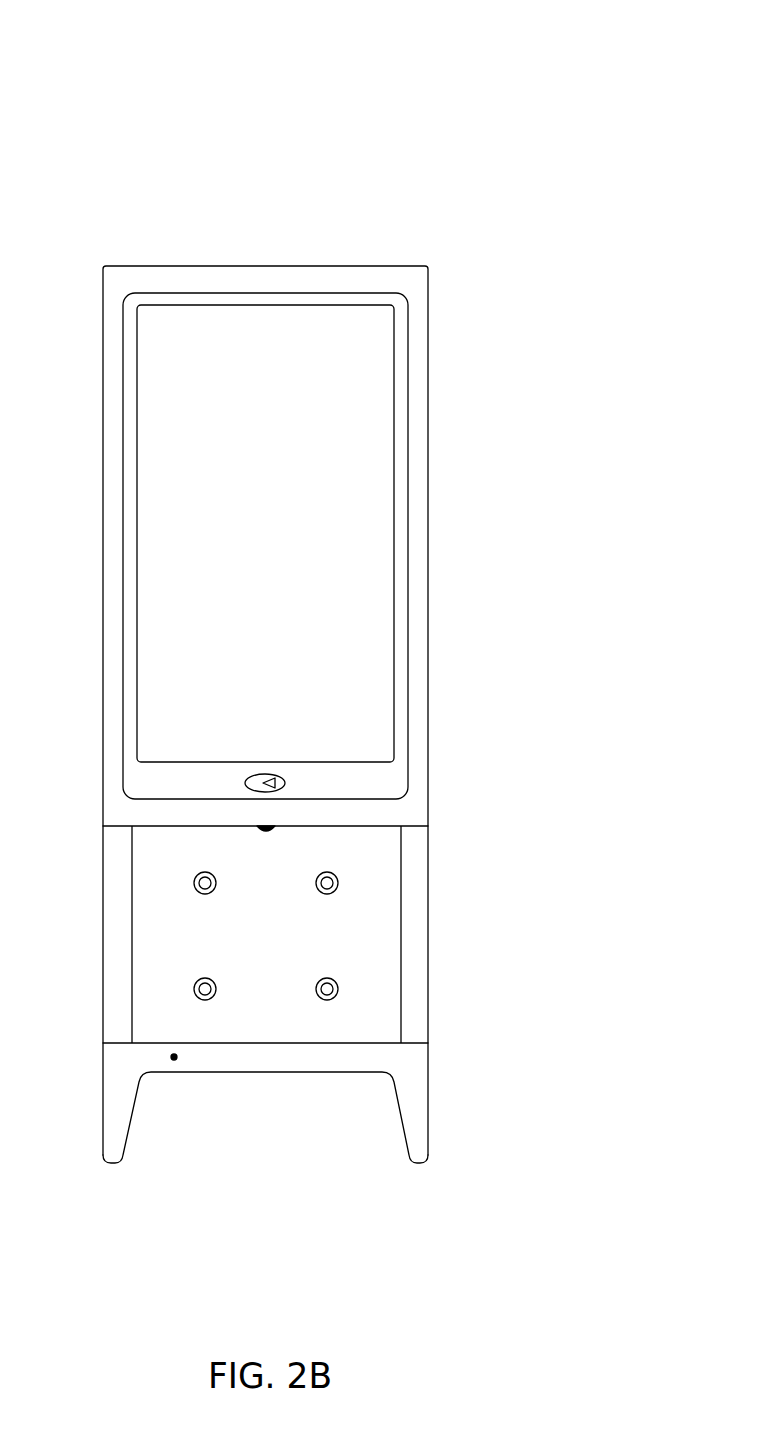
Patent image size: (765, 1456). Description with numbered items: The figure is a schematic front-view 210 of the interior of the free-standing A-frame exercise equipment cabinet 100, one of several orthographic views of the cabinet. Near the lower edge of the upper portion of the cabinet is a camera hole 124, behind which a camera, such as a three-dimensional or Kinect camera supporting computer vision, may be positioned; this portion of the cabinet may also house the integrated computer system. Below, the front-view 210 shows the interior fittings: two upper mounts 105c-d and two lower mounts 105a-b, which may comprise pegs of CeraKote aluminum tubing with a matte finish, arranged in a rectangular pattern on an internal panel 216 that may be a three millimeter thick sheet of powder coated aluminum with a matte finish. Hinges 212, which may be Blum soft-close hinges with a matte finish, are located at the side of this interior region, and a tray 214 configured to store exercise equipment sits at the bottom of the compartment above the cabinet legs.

The front-view 210 is at (510, 60).
The free-standing A-frame exercise equipment cabinet 100 is at (186, 266).
The camera hole 124 is at (285, 779).
The hinges 212 is at (418, 845).
The internal panel 216 is at (372, 928).
The mounts 105c-d is at (216, 883).
The mounts 105a-b is at (216, 989).
The tray 214 is at (175, 1043).